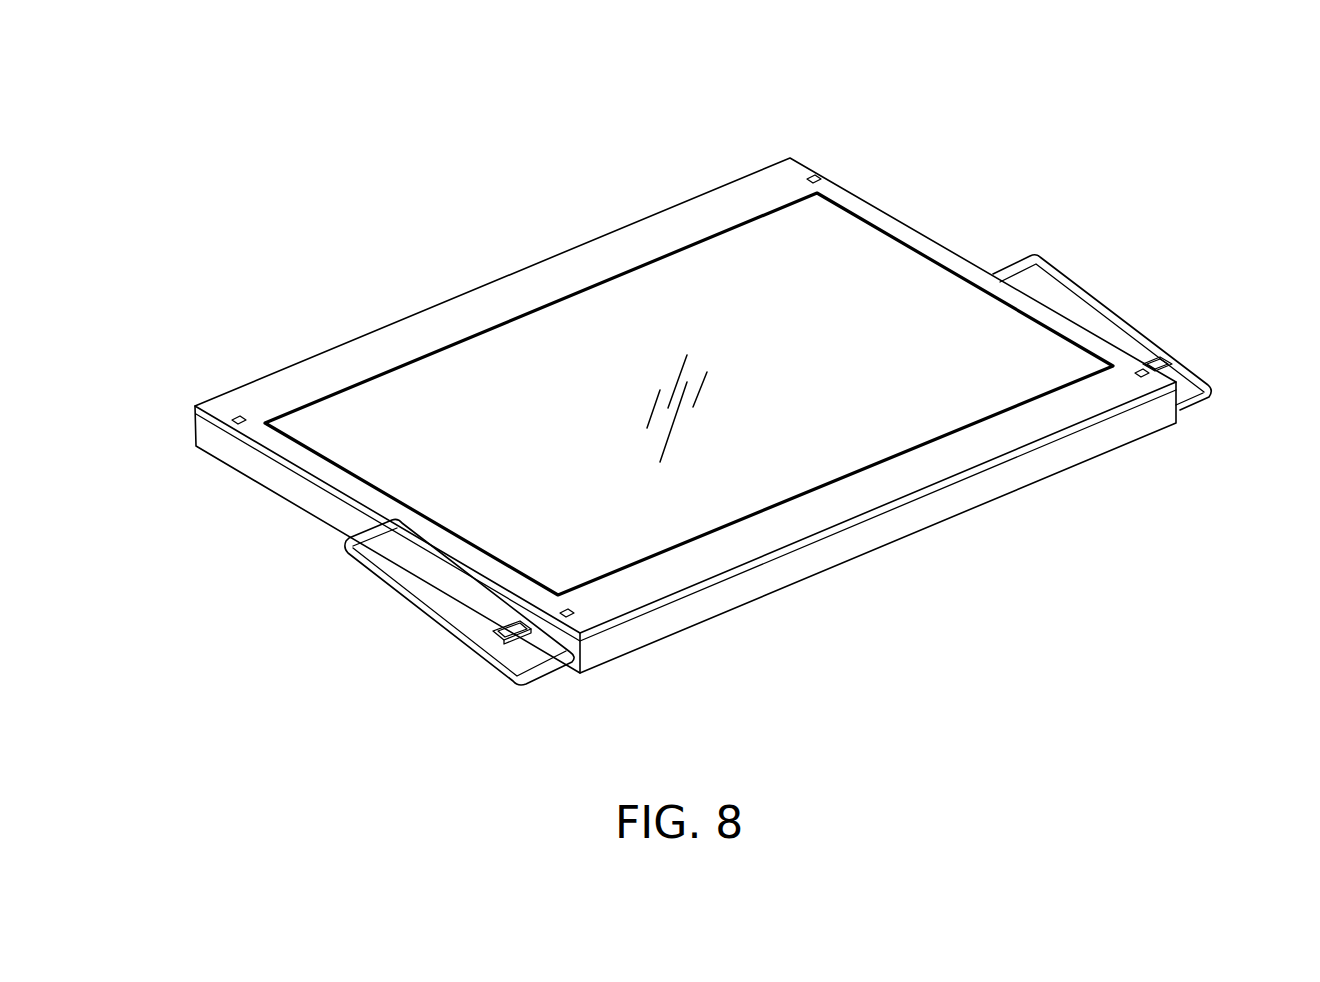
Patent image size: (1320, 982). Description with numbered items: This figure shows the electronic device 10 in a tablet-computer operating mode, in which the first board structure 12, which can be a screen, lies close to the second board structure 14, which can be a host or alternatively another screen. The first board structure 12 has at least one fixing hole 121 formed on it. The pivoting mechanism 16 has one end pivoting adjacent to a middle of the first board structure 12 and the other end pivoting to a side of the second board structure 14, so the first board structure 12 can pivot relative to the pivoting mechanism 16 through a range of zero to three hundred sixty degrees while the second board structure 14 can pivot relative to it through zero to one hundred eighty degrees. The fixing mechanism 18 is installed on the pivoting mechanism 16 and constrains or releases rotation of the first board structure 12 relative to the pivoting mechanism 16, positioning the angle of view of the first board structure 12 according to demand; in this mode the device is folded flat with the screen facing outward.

The electronic device 10 is at (519, 155).
The first board structure 12 is at (890, 282).
The fixing hole 121 is at (815, 177).
The second board structure 14 is at (233, 450).
The pivoting mechanism 16 is at (1190, 386).
The fixing mechanism 18 is at (1160, 362).